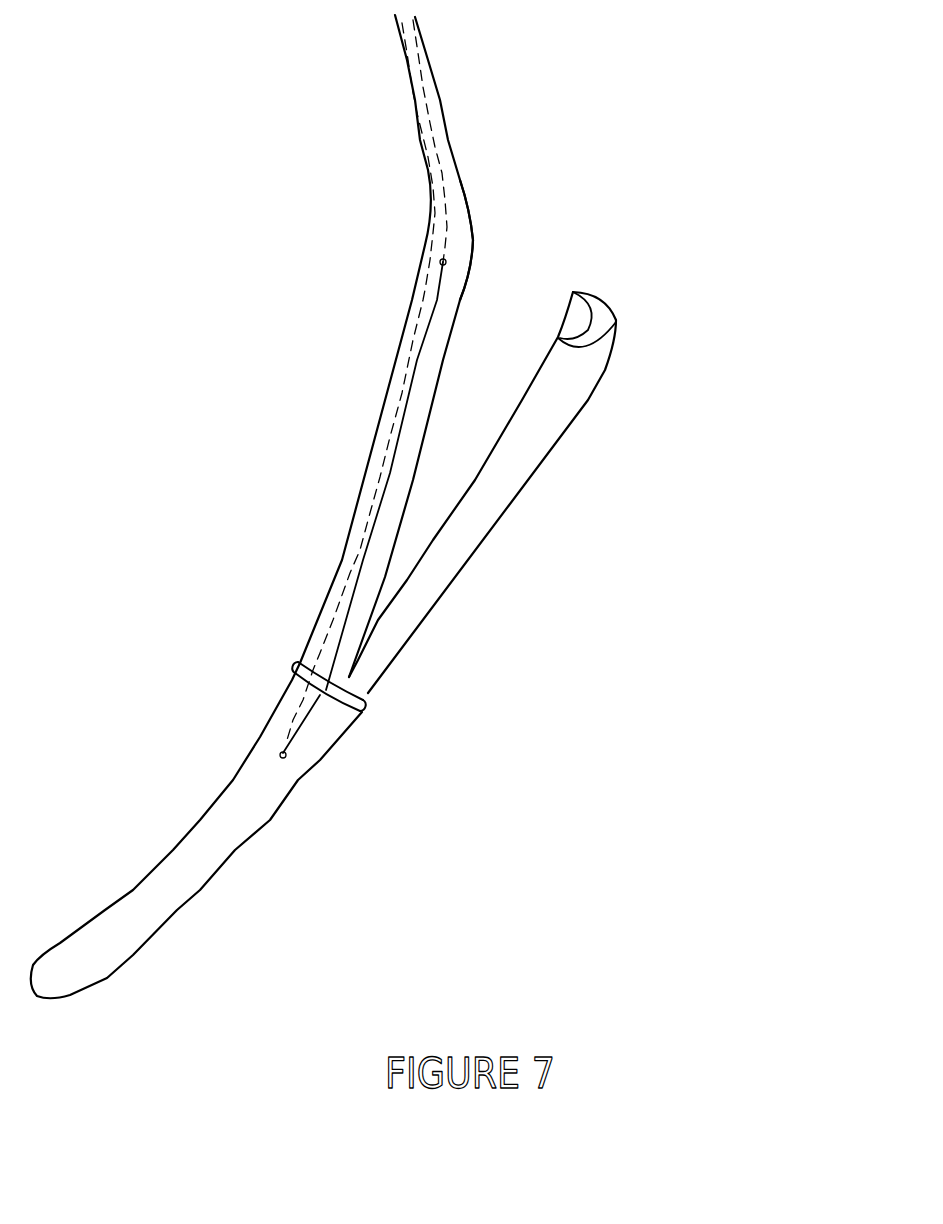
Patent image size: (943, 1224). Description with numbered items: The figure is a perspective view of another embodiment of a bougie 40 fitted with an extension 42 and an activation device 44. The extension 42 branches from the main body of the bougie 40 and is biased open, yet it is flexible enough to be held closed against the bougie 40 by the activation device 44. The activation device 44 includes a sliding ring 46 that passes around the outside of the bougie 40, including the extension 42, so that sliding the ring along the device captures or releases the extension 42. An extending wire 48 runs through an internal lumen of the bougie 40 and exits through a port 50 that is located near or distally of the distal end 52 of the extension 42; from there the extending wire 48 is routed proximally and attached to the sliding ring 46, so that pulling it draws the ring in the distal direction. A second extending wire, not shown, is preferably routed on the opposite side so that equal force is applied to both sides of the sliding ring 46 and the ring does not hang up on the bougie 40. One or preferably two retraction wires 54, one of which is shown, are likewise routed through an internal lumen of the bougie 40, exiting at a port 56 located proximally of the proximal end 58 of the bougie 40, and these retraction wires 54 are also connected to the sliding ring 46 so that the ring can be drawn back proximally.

The bougie 40 is at (600, 670).
The extension 42 is at (616, 320).
The activation device 44 is at (264, 690).
The sliding ring 46 is at (293, 665).
The extending wire 48 is at (305, 728).
The port 50 is at (286, 757).
The distal end 52 is at (353, 680).
The retraction wire 54 is at (403, 424).
The port 56 is at (445, 258).
The proximal end 58 is at (472, 253).